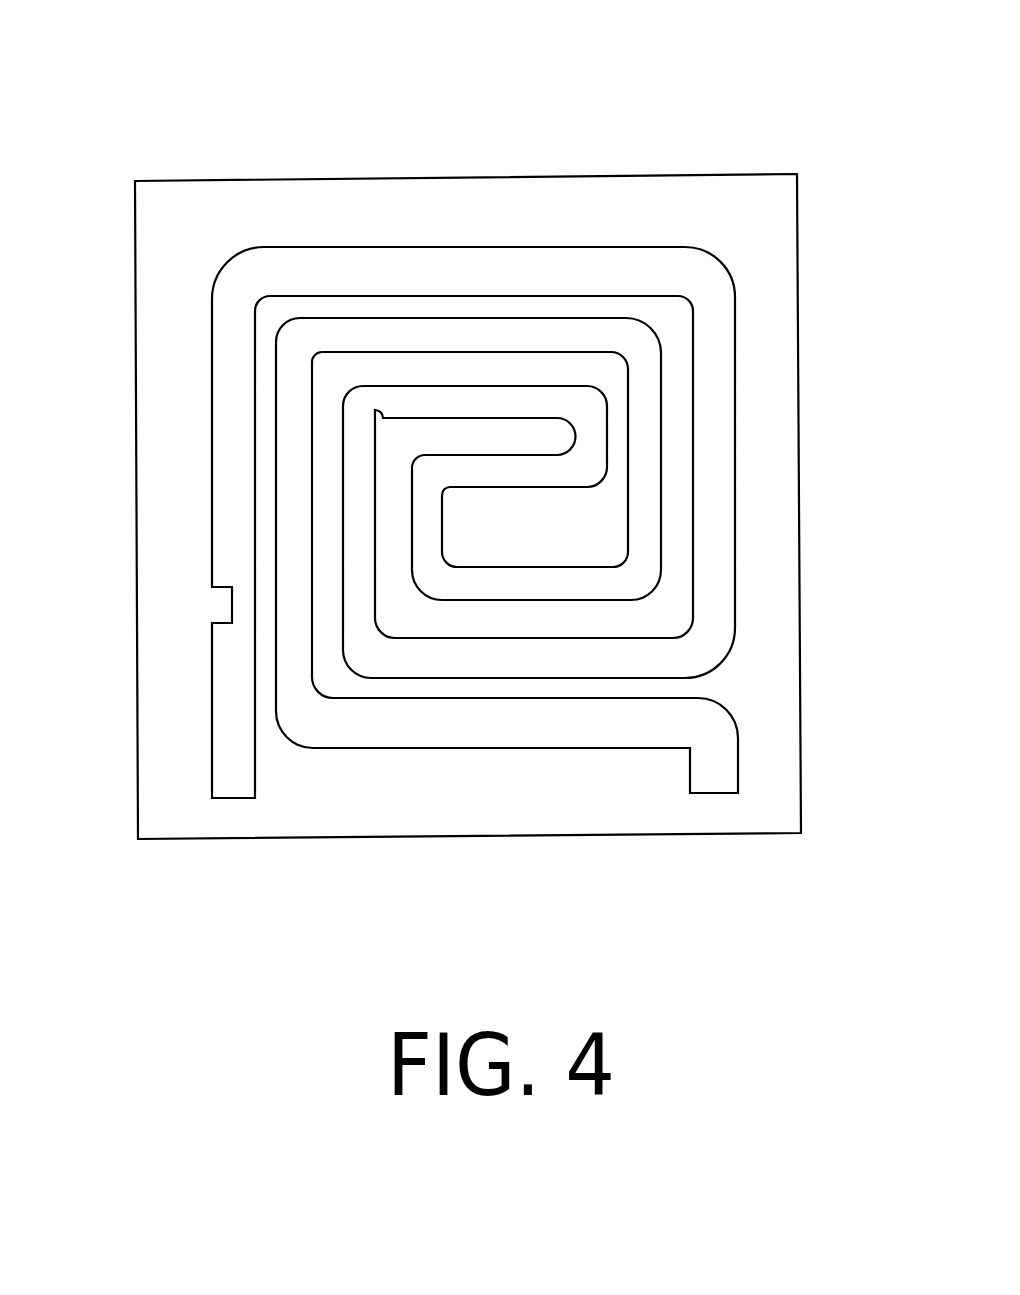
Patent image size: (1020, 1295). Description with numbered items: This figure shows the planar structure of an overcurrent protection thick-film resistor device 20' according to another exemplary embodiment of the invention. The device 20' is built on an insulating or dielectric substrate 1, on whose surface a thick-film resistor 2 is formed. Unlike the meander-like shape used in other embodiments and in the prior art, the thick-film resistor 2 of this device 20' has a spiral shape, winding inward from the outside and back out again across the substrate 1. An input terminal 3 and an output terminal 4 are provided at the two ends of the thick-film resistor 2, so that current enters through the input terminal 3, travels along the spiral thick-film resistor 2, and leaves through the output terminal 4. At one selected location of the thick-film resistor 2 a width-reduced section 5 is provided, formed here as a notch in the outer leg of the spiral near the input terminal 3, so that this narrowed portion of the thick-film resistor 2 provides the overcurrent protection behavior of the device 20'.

The thick-film resistor device 20' is at (485, 490).
The substrate 1 is at (772, 370).
The thick-film resistor 2 is at (584, 263).
The input terminal 3 is at (235, 773).
The output terminal 4 is at (717, 770).
The width-reduced section 5 is at (202, 605).